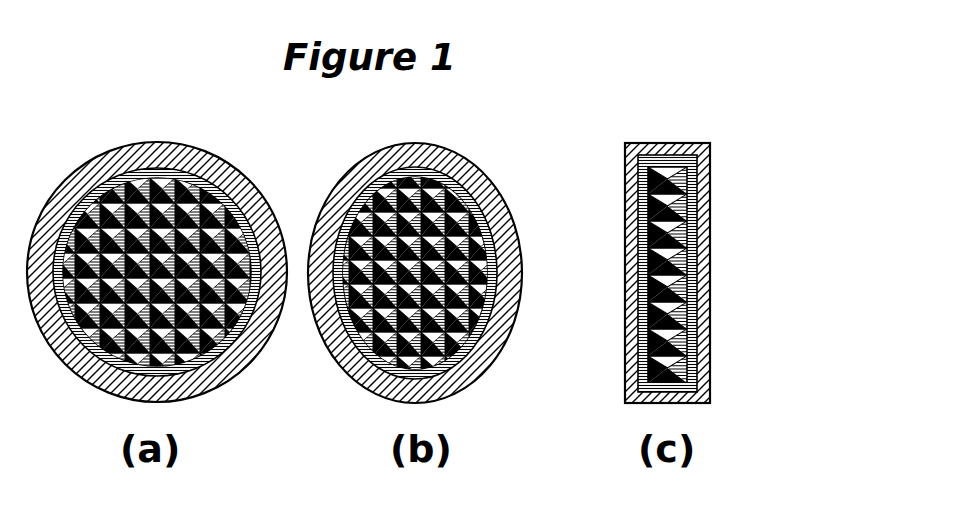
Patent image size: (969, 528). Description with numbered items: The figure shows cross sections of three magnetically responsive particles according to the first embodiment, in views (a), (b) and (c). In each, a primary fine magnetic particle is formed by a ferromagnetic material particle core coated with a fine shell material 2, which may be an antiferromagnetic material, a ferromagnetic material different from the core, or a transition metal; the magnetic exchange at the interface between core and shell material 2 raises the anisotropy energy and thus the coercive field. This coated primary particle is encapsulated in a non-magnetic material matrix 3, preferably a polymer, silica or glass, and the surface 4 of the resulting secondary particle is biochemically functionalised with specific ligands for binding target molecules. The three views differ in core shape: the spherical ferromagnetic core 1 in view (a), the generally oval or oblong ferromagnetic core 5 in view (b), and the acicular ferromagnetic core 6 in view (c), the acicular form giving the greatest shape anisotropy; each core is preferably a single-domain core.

The ferromagnetic core 1 is at (95, 242).
The shell material 2 is at (205, 172).
The non-magnetic material matrix 3 is at (338, 192).
The surface 4 is at (47, 196).
The ferromagnetic core 5 is at (385, 215).
The ferromagnetic core 6 is at (663, 200).